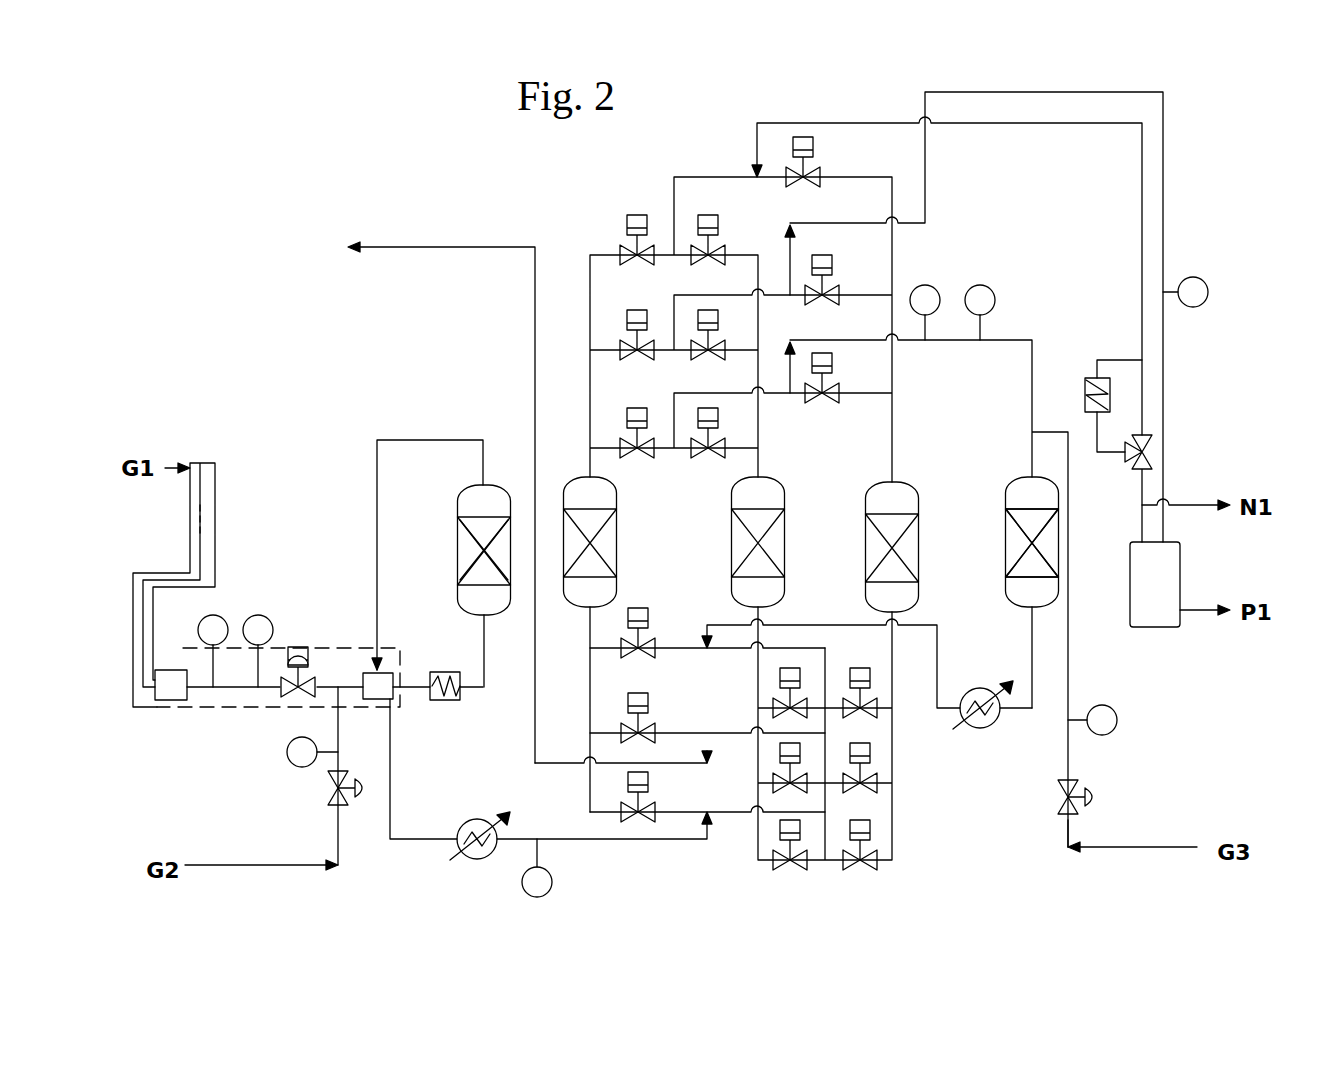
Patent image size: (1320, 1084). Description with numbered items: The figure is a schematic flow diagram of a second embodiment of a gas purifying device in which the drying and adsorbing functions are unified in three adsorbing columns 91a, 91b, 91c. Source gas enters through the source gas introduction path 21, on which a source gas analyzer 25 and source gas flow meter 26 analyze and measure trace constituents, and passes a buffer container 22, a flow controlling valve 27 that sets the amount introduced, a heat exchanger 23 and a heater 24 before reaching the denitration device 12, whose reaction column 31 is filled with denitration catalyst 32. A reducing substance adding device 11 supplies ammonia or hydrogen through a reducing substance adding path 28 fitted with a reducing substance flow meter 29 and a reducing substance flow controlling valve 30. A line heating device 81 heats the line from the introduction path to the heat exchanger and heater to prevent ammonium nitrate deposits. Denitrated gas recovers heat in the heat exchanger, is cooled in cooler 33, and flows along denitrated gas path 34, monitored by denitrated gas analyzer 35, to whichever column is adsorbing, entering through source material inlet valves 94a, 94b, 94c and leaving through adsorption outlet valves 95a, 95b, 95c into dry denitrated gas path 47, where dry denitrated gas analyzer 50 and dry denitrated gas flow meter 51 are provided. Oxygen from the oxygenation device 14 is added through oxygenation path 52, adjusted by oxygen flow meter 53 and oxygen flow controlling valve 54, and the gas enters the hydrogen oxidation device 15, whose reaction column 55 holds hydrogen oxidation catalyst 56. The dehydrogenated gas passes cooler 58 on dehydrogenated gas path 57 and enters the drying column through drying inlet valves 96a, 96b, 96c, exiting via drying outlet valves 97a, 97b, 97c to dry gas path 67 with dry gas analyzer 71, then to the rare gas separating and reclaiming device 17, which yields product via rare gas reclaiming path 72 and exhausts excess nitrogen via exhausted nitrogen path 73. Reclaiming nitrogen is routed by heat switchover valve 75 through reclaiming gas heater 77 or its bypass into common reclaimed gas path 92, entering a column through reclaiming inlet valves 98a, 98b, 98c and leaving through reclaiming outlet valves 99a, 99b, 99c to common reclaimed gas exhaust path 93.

The reducing substance adding device 11 is at (350, 848).
The denitration device 12 is at (450, 523).
The oxygenation device 14 is at (1108, 840).
The hydrogen oxidation device 15 is at (993, 502).
The rare gas separating and reclaiming device 17 is at (1143, 627).
The source gas introduction path 21 is at (214, 478).
The buffer container 22 is at (162, 700).
The heat exchanger 23 is at (392, 668).
The heater 24 is at (445, 700).
The source gas analyzer 25 is at (220, 613).
The source gas flow meter 26 is at (268, 616).
The flow controlling valve 27 is at (290, 707).
The reducing substance adding path 28 is at (250, 865).
The reducing substance flow meter 29 is at (295, 765).
The reducing substance flow controlling valve 30 is at (330, 797).
The reaction column 31 is at (498, 483).
The denitration catalyst 32 is at (470, 550).
The cooler 33 is at (460, 825).
The denitrated gas path 34 is at (570, 838).
The denitrated gas analyzer 35 is at (555, 880).
The dry denitrated gas path 47 is at (926, 590).
The dry denitrated gas analyzer 50 is at (935, 285).
The dry denitrated gas flow meter 51 is at (995, 290).
The oxygenation path 52 is at (1130, 850).
The oxygen flow meter 53 is at (1110, 733).
The oxygen flow controlling valve 54 is at (1055, 803).
The reaction column 55 is at (1008, 587).
The hydrogen oxidation catalyst 56 is at (1010, 550).
The dehydrogenated gas path 57 is at (940, 677).
The cooler 58 is at (985, 728).
The dry gas path 67 is at (925, 158).
The dry gas analyzer 71 is at (1195, 277).
The rare gas reclaiming path 72 is at (1193, 610).
The exhausted nitrogen path 73 is at (1190, 505).
The heat switchover valve 75 is at (1133, 460).
The reclaiming gas heater 77 is at (1080, 376).
The line heating device 81 is at (218, 540).
The first adsorbing column 91a is at (607, 552).
The second adsorbing column 91b is at (777, 547).
The third adsorbing column 91c is at (875, 558).
The common reclaimed gas path 92 is at (808, 123).
The common reclaimed gas exhaust path 93 is at (408, 250).
The source material inlet valve 94a is at (660, 805).
The source material inlet valve 94b is at (778, 868).
The source material inlet valve 94c is at (868, 870).
The adsorption outlet valve 95a is at (635, 457).
The adsorption outlet valve 95b is at (705, 457).
The adsorption outlet valve 95c is at (830, 400).
The drying inlet valve 96a is at (655, 632).
The drying inlet valve 96b is at (780, 700).
The drying inlet valve 96c is at (870, 716).
The drying outlet valve 97a is at (652, 342).
The drying outlet valve 97b is at (702, 362).
The drying outlet valve 97c is at (832, 285).
The reclaiming inlet valve 98a is at (622, 250).
The reclaiming inlet valve 98b is at (725, 252).
The reclaiming inlet valve 98c is at (817, 167).
The reclaiming outlet valve 99a is at (660, 725).
The reclaiming outlet valve 99b is at (803, 792).
The reclaiming outlet valve 99c is at (880, 770).